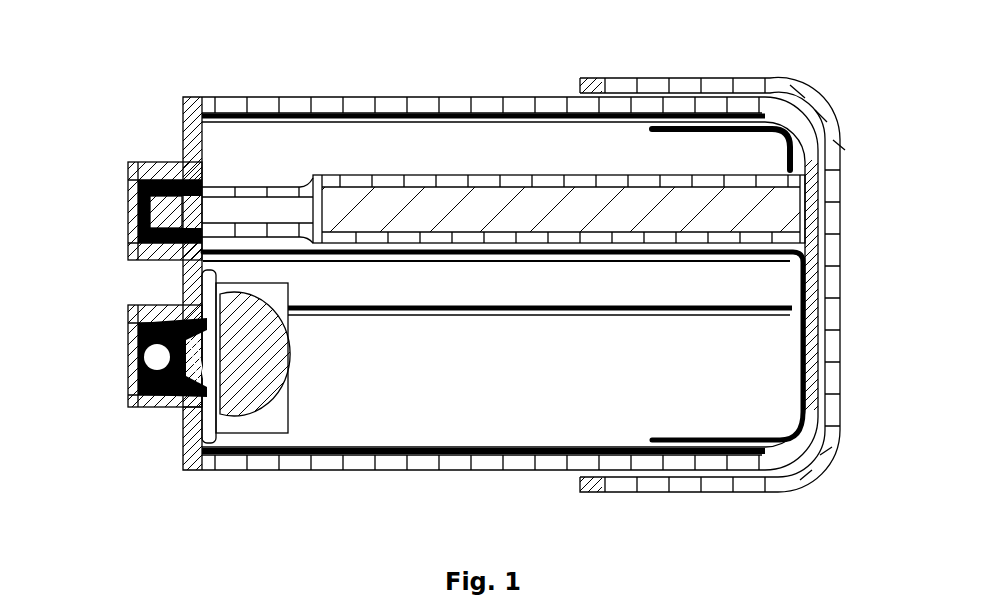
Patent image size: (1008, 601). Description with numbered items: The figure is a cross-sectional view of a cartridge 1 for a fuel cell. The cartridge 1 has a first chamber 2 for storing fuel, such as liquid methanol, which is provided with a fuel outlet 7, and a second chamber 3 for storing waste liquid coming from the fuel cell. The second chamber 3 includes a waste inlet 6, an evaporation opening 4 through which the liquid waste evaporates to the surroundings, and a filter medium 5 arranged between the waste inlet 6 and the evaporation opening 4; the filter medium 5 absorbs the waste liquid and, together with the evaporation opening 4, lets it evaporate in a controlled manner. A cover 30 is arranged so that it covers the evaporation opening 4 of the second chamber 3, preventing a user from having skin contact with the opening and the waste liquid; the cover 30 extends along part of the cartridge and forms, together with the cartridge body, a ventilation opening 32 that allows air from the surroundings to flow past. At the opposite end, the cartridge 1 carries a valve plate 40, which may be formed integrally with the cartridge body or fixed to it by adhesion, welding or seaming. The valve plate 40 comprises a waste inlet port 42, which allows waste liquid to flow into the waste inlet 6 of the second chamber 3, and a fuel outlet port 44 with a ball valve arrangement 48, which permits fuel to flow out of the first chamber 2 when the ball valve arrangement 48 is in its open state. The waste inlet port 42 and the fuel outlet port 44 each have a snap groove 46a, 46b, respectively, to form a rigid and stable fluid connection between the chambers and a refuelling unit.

The cartridge 1 is at (212, 68).
The first chamber 2 is at (478, 421).
The second chamber 3 is at (435, 196).
The evaporation opening 4 is at (803, 215).
The filter medium 5 is at (582, 207).
The waste inlet 6 is at (280, 205).
The fuel outlet 7 is at (203, 365).
The cover 30 is at (730, 84).
The ventilation opening 32 is at (825, 290).
The valve plate 40 is at (193, 432).
The waste inlet port 42 is at (138, 232).
The fuel outlet port 44 is at (138, 392).
The snap groove 46a is at (145, 163).
The snap groove 46b is at (145, 310).
The ball valve arrangement 48 is at (143, 355).